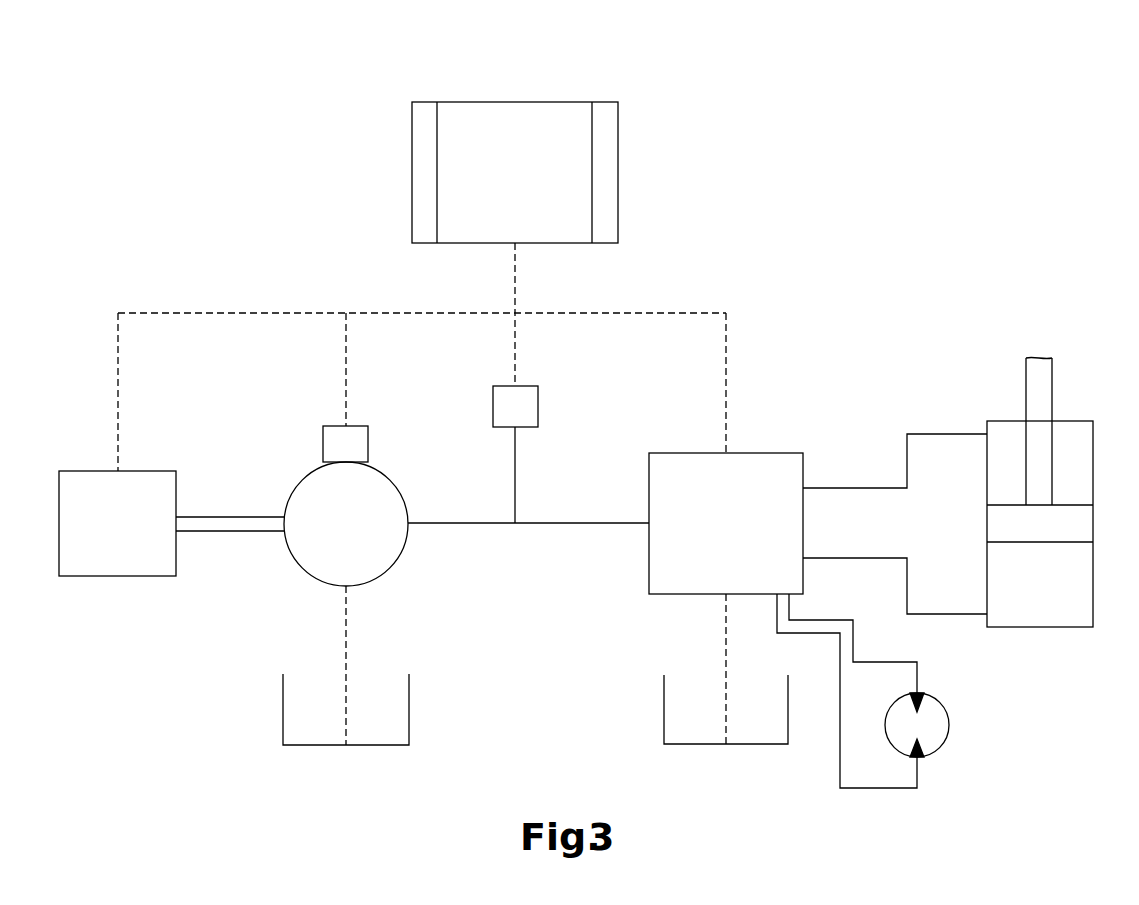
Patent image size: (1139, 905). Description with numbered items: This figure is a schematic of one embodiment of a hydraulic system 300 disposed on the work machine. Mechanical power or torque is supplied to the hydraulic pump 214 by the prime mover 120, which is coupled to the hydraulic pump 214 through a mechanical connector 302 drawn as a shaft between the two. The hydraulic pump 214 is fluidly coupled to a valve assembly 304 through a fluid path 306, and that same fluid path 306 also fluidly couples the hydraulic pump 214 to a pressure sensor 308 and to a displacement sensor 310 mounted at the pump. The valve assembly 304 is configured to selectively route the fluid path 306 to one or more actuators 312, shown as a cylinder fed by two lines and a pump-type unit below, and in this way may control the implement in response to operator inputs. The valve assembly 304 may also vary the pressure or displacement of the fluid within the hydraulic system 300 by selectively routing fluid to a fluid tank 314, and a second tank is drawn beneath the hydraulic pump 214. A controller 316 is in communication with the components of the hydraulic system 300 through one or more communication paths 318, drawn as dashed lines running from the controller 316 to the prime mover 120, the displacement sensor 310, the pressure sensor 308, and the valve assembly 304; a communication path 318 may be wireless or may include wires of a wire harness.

The hydraulic system 300 is at (992, 150).
The prime mover 120 is at (122, 576).
The mechanical connector 302 is at (222, 517).
The hydraulic pump 214 is at (399, 557).
The displacement sensor 310 is at (356, 426).
The fluid path 306 is at (515, 523).
The pressure sensor 308 is at (538, 405).
The valve assembly 304 is at (763, 453).
The controller 316 is at (618, 170).
The communication path 318 is at (366, 313).
The fluid tank 314 is at (664, 708).
The actuator 312 is at (1043, 358).